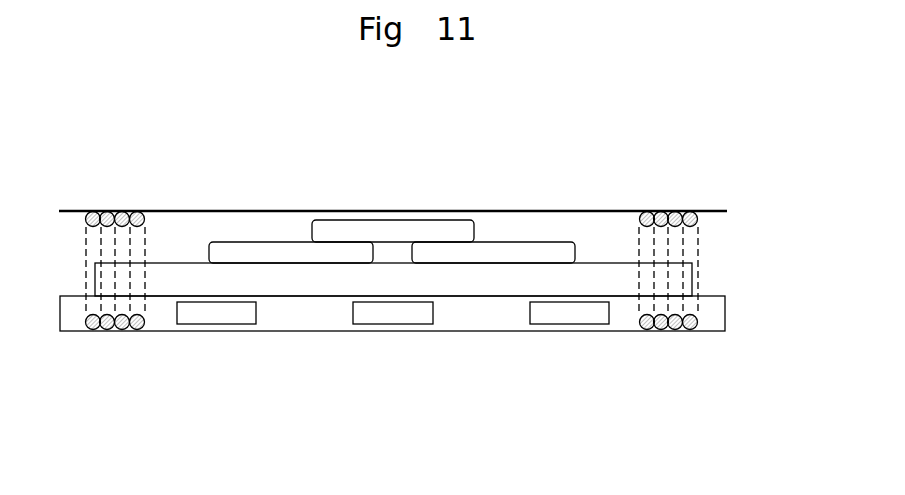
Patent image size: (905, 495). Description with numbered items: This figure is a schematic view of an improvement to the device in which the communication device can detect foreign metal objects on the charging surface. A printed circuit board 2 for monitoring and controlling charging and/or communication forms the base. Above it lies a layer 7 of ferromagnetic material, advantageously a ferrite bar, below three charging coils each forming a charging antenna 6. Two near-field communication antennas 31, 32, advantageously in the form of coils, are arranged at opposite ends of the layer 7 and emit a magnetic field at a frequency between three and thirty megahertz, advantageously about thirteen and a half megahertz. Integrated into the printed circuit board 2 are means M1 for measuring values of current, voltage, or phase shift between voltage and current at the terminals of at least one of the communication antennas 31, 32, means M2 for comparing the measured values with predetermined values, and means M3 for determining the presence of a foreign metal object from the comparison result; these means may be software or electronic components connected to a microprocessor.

The printed circuit board 2 is at (315, 322).
The charging antenna 6 is at (282, 253).
The layer of ferromagnetic material 7 is at (607, 283).
The near-field communication antenna 31 is at (119, 211).
The near-field communication antenna 32 is at (657, 210).
The means for measuring values M1 is at (218, 313).
The means for comparing values M2 is at (395, 313).
The means for determining the presence of a foreign metal object M3 is at (568, 313).